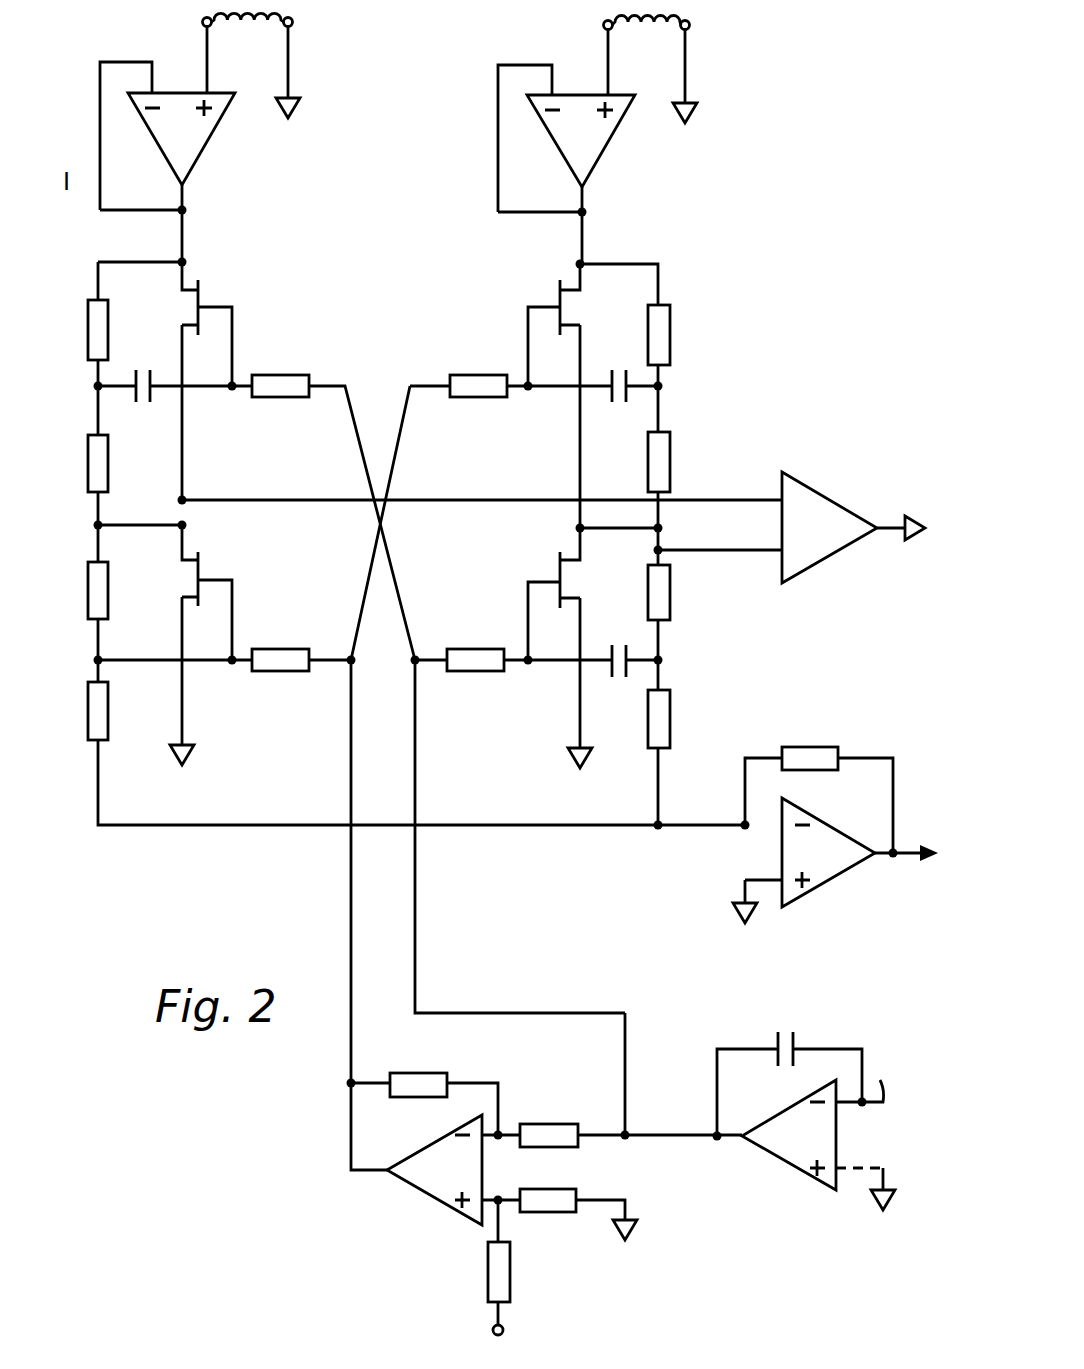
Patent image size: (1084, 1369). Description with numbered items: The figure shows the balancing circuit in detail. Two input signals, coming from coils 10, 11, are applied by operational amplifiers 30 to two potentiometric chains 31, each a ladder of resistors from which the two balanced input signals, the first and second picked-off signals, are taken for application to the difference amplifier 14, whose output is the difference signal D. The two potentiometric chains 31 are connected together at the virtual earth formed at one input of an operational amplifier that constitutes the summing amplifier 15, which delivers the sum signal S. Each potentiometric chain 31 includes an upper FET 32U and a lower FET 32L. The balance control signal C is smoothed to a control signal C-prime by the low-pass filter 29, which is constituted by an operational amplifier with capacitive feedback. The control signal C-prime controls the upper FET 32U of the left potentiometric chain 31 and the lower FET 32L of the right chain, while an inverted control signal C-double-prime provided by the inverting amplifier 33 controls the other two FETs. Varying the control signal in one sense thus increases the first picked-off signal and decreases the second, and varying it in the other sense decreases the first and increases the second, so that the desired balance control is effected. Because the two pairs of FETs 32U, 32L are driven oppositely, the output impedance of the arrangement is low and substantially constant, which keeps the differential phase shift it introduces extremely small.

The first coil 10 is at (242, 25).
The second coil 11 is at (656, 27).
The operational amplifier 30 is at (208, 145).
The potentiometric chain 31 is at (273, 718).
The upper FET 32U is at (200, 298).
The lower FET 32L is at (200, 570).
The difference amplifier 14 is at (840, 555).
The summing amplifier 15 is at (842, 875).
The low-pass filter 29 is at (770, 1155).
The inverting amplifier 33 is at (430, 1200).